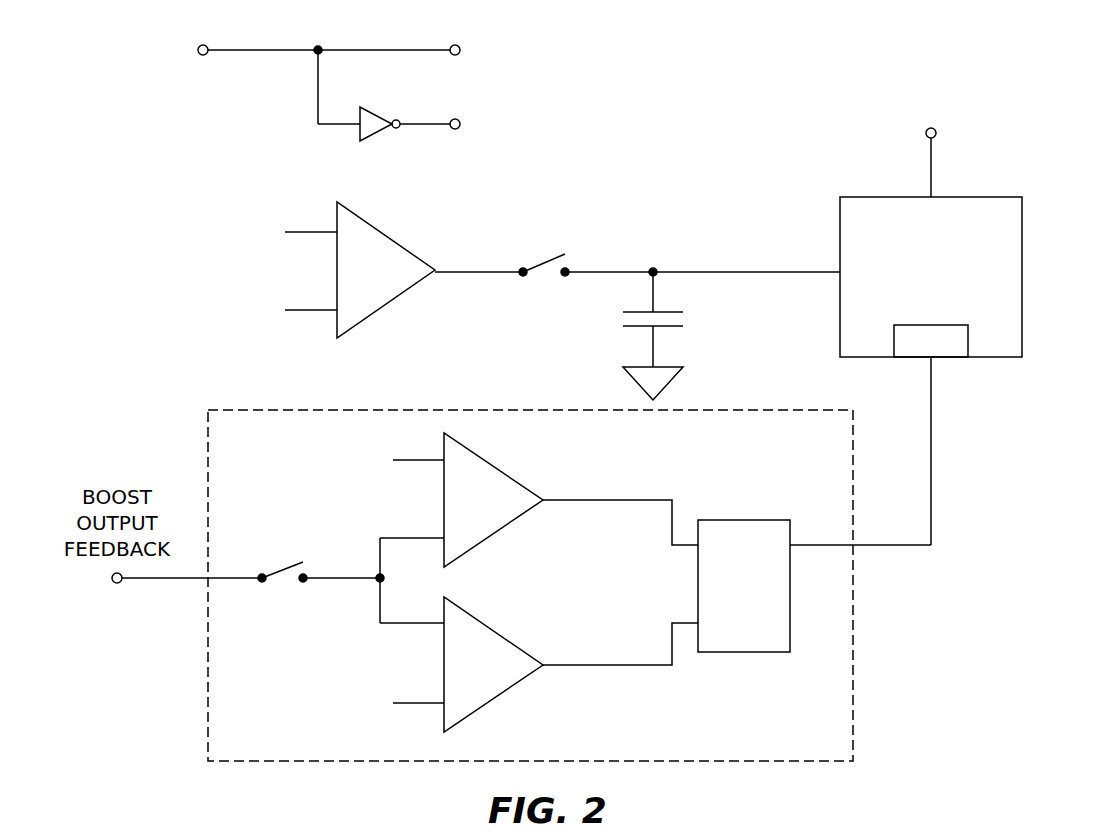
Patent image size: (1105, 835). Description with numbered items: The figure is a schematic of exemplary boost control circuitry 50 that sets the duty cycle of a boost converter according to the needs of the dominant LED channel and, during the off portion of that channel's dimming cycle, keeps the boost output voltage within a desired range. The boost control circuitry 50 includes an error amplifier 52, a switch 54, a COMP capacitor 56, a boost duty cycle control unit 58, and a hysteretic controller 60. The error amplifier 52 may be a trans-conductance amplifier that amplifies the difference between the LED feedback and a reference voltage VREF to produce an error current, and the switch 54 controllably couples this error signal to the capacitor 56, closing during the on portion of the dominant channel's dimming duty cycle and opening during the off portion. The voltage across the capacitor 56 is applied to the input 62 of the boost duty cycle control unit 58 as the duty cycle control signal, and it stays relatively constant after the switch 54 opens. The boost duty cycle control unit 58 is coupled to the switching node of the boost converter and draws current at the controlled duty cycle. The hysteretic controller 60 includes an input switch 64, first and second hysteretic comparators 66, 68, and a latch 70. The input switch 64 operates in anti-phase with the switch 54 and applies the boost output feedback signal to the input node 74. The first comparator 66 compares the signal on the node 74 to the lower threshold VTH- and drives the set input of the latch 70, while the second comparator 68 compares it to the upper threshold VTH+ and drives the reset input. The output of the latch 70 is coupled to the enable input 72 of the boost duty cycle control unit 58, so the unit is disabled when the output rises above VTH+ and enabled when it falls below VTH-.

The boost control circuitry 50 is at (150, 147).
The error amplifier 52 is at (287, 270).
The switch 54 is at (545, 262).
The COMP capacitor 56 is at (640, 329).
The boost duty cycle control unit 58 is at (1022, 272).
The hysteretic controller 60 is at (853, 656).
The input 62 is at (812, 278).
The input switch 64 is at (281, 570).
The first hysteretic comparator 66 is at (506, 500).
The second hysteretic comparator 68 is at (506, 664).
The latch 70 is at (742, 519).
The enable input 72 is at (932, 401).
The input node 74 is at (384, 577).